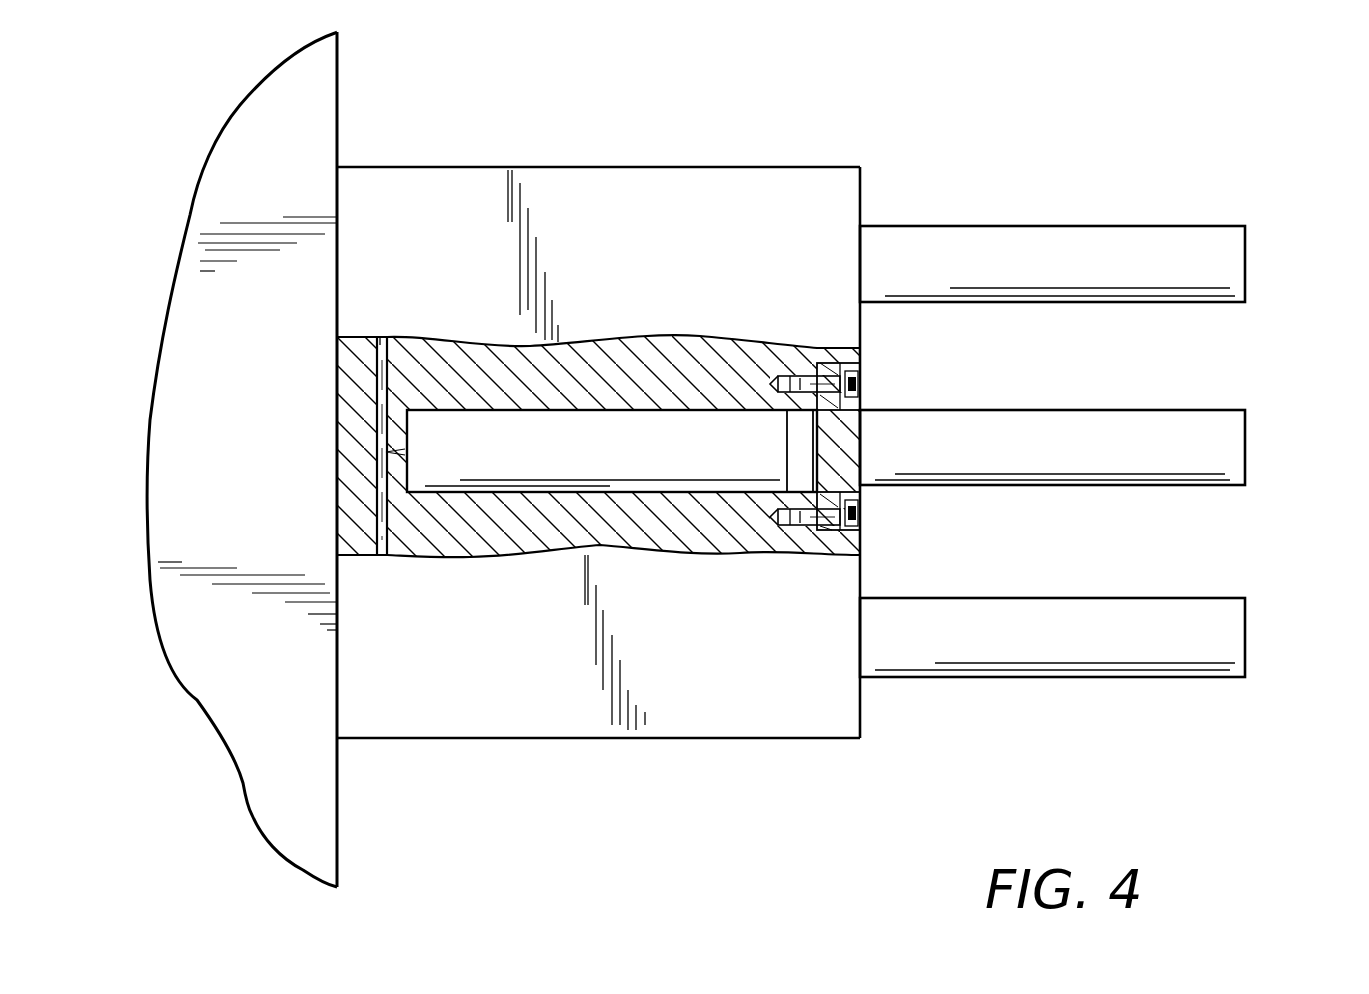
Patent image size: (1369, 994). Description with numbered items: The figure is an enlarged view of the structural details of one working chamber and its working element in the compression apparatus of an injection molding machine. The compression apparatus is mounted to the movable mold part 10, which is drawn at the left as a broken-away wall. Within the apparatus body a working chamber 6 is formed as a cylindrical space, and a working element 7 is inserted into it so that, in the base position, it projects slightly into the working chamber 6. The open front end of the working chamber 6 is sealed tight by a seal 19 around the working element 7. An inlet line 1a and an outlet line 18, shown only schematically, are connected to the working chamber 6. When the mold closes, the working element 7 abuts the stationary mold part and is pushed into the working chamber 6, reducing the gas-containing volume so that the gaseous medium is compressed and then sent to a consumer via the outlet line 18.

The inlet line 1a is at (380, 342).
The working chamber 6 is at (612, 477).
The working element 7 is at (1135, 235).
The movable mold part 10 is at (297, 745).
The outlet line 18 is at (383, 555).
The seal 19 is at (830, 347).